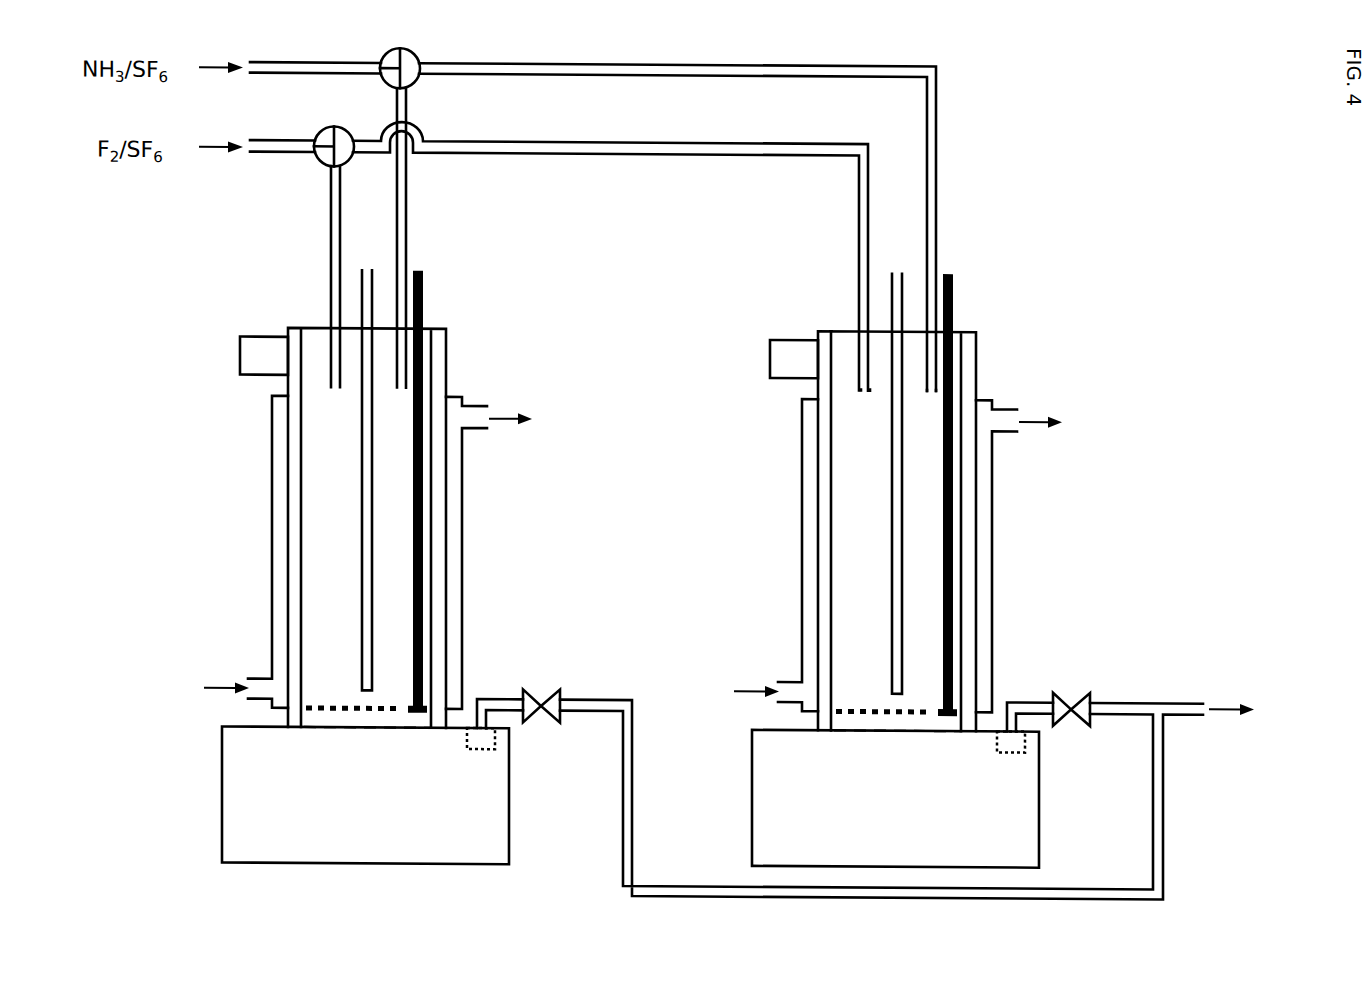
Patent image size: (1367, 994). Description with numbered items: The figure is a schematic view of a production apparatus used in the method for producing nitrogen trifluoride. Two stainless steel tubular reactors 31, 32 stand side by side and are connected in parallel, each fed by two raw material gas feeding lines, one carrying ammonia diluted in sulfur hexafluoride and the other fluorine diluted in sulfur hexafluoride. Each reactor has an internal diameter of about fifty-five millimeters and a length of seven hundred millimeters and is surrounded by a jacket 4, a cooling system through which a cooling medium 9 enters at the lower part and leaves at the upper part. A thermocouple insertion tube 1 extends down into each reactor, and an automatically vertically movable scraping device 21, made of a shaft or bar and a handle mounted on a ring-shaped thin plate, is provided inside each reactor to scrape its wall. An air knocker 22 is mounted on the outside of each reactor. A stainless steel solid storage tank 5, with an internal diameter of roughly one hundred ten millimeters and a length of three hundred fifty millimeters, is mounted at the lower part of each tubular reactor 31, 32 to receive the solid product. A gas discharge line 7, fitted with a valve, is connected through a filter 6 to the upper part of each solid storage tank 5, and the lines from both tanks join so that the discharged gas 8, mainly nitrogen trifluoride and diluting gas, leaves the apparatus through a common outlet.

The thermocouple insertion tube 1 is at (372, 286).
The scraping device 21 is at (423, 284).
The tubular reactor 31 is at (447, 325).
The tubular reactor 32 is at (977, 325).
The jacket 4 is at (462, 596).
The air knocker 22 is at (239, 354).
The solid storage tank 5 is at (222, 781).
The filter 6 is at (492, 745).
The gas discharge line 7 is at (503, 695).
The discharged gas 8 is at (1222, 704).
The cooling medium 9 is at (497, 416).